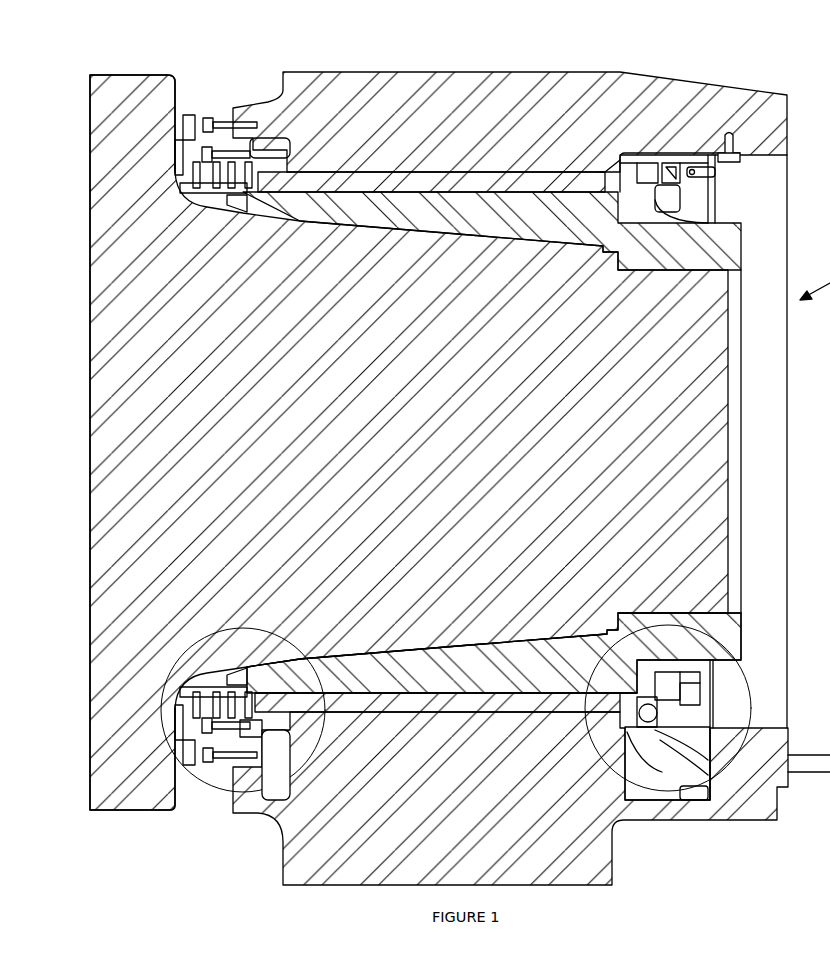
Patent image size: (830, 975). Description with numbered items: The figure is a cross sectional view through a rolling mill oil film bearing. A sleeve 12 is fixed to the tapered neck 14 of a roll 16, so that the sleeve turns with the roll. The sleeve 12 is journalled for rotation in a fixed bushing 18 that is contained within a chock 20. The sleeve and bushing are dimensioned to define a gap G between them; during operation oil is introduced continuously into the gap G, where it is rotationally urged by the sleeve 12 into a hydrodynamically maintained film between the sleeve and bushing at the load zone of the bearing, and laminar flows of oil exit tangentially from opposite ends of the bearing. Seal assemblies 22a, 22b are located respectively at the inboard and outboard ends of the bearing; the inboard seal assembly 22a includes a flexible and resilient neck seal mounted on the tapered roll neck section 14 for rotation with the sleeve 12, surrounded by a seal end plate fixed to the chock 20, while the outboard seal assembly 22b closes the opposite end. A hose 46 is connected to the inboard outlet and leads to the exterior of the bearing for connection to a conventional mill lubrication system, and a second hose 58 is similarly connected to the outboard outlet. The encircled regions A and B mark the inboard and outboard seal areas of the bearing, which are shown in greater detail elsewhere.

The sleeve 12 is at (531, 478).
The tapered neck 14 is at (482, 429).
The roll 16 is at (148, 79).
The fixed bushing 18 is at (487, 700).
The chock 20 is at (454, 810).
The inboard seal assembly 22a is at (253, 682).
The outboard seal assembly 22b is at (722, 672).
The hose 46 is at (708, 793).
The second hose 58 is at (627, 777).
The detail region A is at (207, 783).
The detail region B is at (748, 690).
The gap G is at (408, 697).